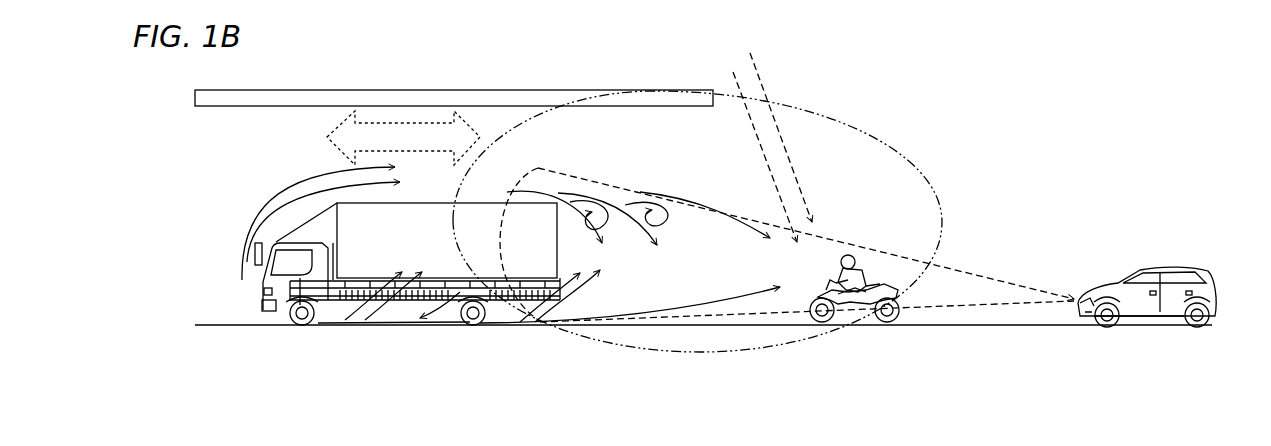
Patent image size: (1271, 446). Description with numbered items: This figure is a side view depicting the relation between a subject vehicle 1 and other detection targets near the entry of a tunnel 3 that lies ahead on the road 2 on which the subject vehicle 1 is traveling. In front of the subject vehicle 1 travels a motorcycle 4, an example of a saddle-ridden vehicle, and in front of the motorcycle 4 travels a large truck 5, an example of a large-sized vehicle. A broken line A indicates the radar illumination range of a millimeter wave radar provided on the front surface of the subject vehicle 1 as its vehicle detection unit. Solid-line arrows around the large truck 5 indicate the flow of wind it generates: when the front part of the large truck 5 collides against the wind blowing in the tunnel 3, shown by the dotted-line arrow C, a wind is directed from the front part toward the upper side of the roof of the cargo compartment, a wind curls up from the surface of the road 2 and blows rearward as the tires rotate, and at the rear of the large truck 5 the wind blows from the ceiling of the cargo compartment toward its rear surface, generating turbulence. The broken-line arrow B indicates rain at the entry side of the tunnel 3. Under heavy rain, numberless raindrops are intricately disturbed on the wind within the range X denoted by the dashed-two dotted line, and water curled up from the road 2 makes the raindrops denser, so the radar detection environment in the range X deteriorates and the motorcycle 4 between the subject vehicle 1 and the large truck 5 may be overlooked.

The subject vehicle 1 is at (1137, 272).
The road 2 is at (935, 328).
The tunnel 3 is at (508, 90).
The motorcycle 4 is at (885, 262).
The large truck 5 is at (262, 292).
The broken line A (radar illumination range) A is at (997, 280).
The arrow B (rain) B is at (805, 197).
The arrow C (wind flow in tunnel) C is at (391, 124).
The range X is at (955, 222).